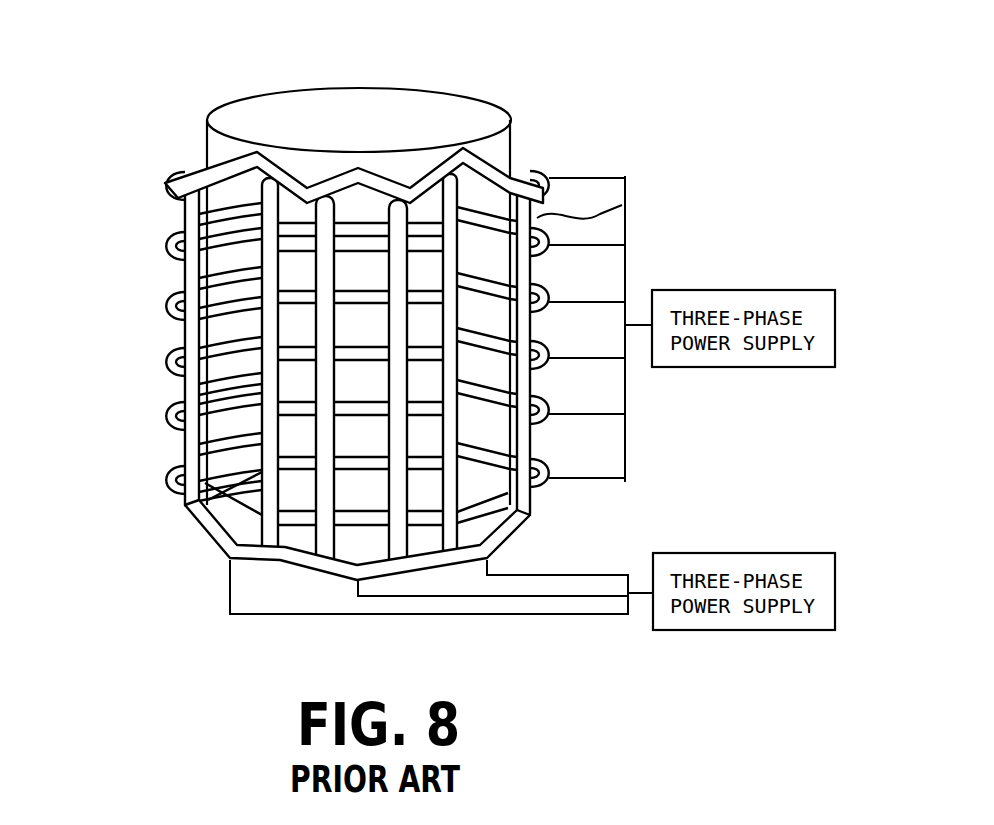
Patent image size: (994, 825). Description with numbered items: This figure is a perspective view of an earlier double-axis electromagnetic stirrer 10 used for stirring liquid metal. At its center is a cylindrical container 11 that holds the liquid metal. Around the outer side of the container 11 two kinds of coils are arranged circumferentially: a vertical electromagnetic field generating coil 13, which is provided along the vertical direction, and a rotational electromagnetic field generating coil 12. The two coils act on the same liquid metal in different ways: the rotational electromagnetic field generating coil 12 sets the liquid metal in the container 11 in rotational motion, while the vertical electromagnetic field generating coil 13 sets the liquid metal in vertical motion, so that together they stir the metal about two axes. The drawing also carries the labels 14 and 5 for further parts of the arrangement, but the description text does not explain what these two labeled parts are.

The induction furnace (prior art) 10 is at (575, 47).
The cylindrical container 11 is at (207, 142).
The rotational electromagnetic field generating coil 12 is at (186, 291).
The vertical electromagnetic field generating coil 13 is at (167, 423).
The lower coil end bend 14 is at (167, 492).
The power supply leads 5 is at (623, 204).